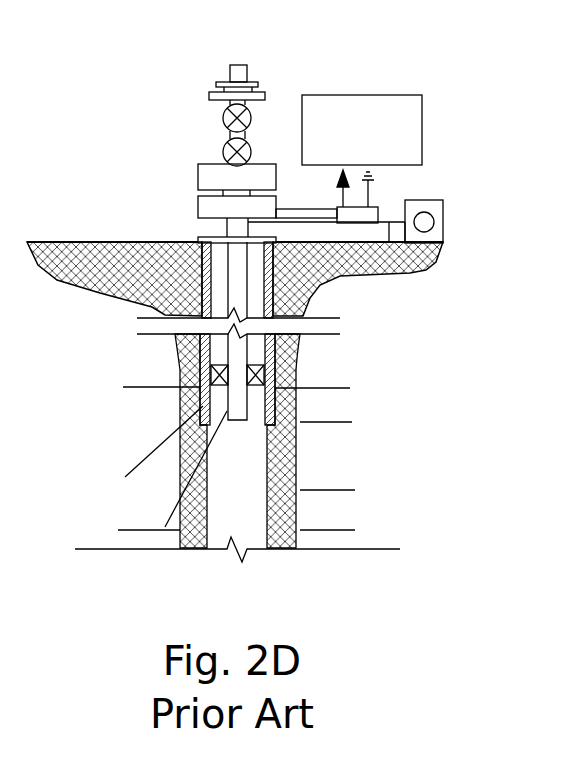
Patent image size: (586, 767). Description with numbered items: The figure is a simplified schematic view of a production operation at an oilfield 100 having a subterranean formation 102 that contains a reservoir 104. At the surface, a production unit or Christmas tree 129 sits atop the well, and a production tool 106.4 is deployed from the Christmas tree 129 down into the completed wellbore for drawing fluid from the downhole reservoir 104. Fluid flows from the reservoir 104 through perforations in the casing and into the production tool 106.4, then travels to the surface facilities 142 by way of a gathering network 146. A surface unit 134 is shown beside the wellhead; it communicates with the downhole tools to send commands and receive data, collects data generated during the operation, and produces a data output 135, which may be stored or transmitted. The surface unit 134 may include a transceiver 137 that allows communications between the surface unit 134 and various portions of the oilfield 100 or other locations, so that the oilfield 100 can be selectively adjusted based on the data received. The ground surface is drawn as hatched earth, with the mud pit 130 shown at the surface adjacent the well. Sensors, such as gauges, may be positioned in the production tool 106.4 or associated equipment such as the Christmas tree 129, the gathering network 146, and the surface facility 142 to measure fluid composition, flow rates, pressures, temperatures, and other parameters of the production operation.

The oilfield 100 is at (130, 115).
The Christmas tree 129 is at (245, 63).
The data output 135 is at (392, 95).
The surface unit 134 is at (338, 204).
The transceiver 137 is at (375, 193).
The surface facilities 142 is at (446, 217).
The gathering network 146 is at (377, 238).
The mud pit 130 is at (118, 272).
The subterranean formation 102 is at (333, 370).
The reservoir 104 is at (378, 470).
The production tool 106.4 is at (184, 491).